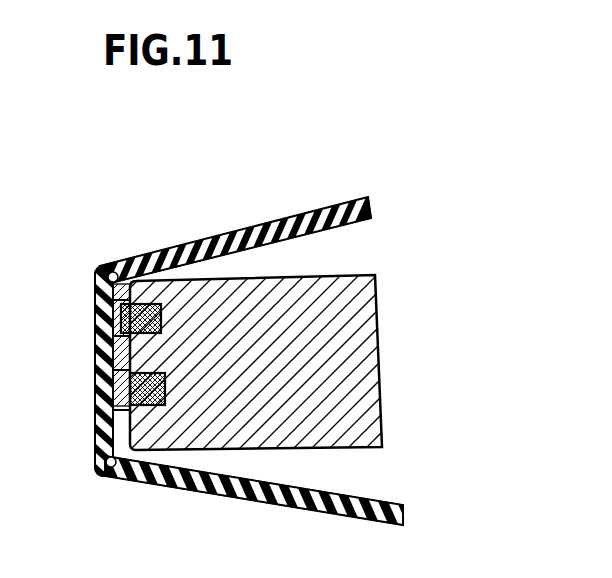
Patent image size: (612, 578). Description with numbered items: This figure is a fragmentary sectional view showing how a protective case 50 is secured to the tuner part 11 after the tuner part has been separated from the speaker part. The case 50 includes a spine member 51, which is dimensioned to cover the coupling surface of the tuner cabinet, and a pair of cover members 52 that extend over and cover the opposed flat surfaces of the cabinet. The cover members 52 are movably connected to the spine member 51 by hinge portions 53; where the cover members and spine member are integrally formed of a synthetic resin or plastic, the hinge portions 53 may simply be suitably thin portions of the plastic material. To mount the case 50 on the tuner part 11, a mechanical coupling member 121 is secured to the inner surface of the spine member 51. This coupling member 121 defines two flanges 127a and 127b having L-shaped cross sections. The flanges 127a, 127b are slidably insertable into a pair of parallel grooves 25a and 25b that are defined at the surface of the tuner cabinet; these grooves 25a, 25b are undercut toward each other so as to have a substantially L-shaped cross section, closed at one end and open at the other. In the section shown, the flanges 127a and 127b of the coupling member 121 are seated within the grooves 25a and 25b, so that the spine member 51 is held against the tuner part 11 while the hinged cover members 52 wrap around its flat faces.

The tuner part 11 is at (348, 259).
The case 50 is at (224, 353).
The spine member 51 is at (108, 366).
The cover members 52 is at (336, 211).
The hinge portions 53 is at (103, 263).
The mechanical coupling member 121 is at (108, 414).
The flange 127a is at (118, 306).
The flange 127b is at (108, 432).
The groove 25a is at (120, 323).
The groove 25b is at (126, 397).